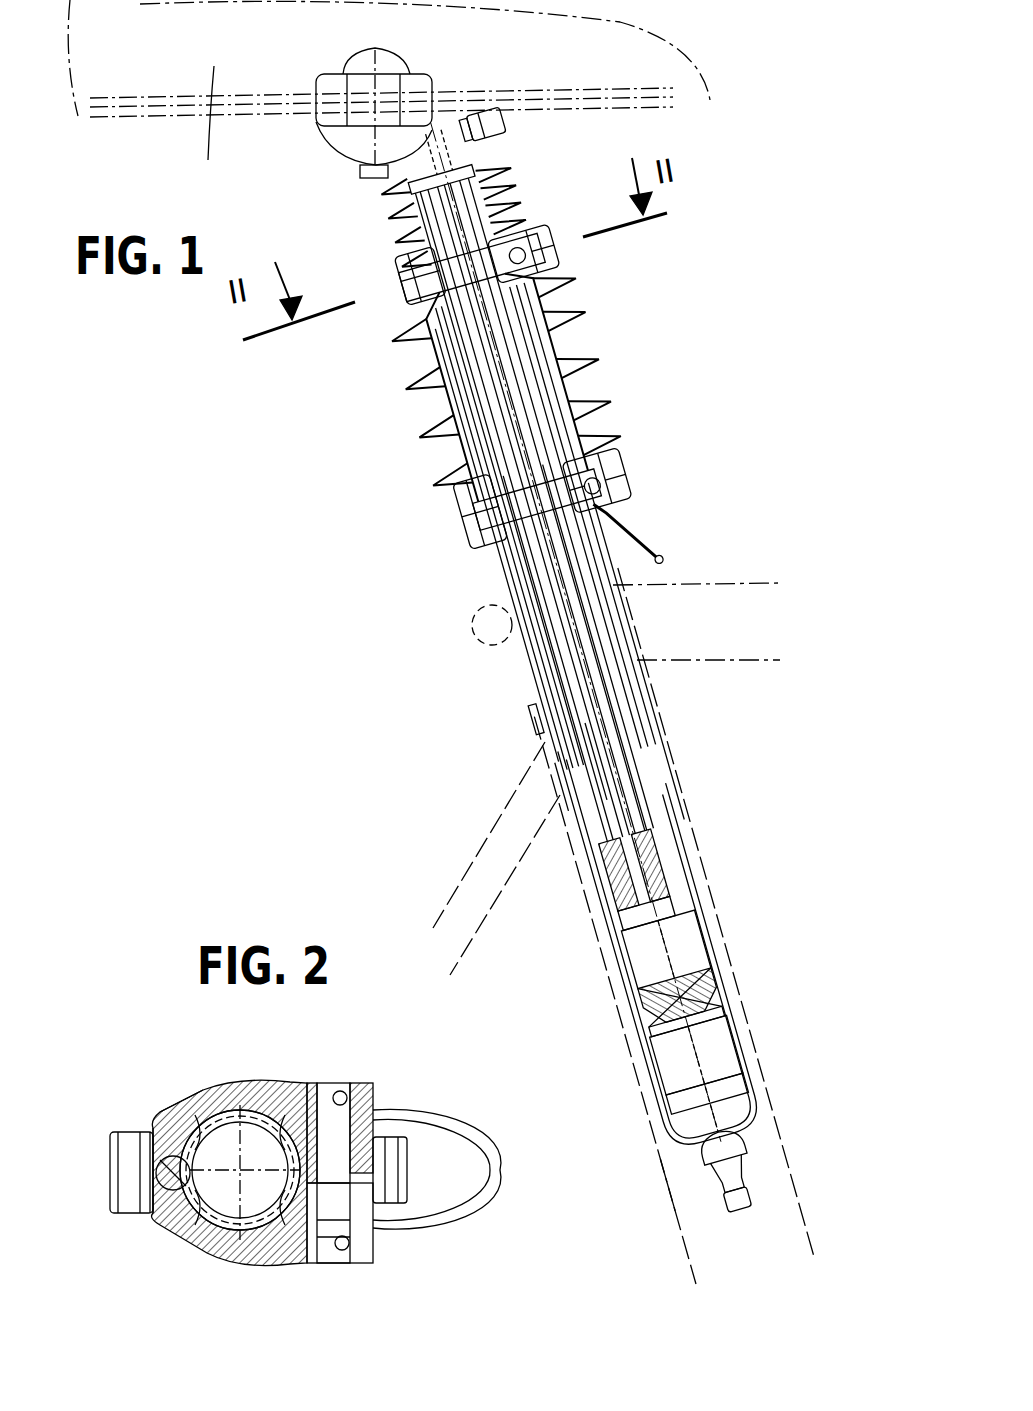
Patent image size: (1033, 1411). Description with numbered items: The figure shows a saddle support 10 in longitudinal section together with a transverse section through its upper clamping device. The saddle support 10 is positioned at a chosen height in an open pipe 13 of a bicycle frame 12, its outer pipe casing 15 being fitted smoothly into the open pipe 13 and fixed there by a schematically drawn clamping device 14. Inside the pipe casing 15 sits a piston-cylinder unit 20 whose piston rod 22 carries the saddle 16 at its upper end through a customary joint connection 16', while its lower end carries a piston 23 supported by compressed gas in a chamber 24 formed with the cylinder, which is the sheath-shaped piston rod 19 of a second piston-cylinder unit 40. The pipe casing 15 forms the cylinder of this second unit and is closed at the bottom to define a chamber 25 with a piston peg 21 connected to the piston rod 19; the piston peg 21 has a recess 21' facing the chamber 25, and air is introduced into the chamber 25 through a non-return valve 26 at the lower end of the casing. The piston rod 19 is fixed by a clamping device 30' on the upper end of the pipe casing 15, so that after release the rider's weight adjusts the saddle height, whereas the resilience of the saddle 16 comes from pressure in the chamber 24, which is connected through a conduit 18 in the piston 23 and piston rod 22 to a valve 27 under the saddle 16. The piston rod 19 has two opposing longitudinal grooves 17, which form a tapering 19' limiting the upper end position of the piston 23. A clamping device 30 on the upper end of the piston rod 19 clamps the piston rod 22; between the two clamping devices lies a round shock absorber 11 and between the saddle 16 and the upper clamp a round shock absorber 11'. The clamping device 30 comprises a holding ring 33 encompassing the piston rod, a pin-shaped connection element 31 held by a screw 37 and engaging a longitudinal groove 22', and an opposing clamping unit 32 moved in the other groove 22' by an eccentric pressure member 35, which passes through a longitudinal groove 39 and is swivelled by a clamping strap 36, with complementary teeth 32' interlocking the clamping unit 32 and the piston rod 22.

In FIG. 1, the saddle support 10 is at (352, 422).
In FIG. 1, the round shock absorber 11 is at (554, 383).
In FIG. 1, the round shock absorber 11' is at (485, 205).
In FIG. 1, the bicycle frame 12 is at (762, 628).
In FIG. 1, the open pipe 13 is at (697, 1262).
In FIG. 1, the clamping device 14 is at (478, 636).
In FIG. 1, the pipe casing 15 is at (533, 670).
In FIG. 1, the saddle 16 is at (381, 130).
In FIG. 1, the joint connection 16' is at (350, 134).
In FIG. 1, the longitudinal grooves 17 is at (505, 575).
In FIG. 1, the conduit 18 is at (585, 708).
In FIG. 1, the piston rod 19 is at (712, 929).
In FIG. 2, the piston rod 19 is at (243, 1211).
In FIG. 1, the tapering 19' is at (598, 574).
In FIG. 1, the piston-cylinder unit 20 is at (612, 994).
In FIG. 1, the piston peg 21 is at (734, 982).
In FIG. 1, the recess 21' is at (658, 1095).
In FIG. 1, the piston rod 22 is at (546, 607).
In FIG. 2, the piston rod 22 is at (229, 1146).
In FIG. 1, the longitudinal groove 22' is at (522, 278).
In FIG. 2, the longitudinal groove 22' is at (211, 1149).
In FIG. 1, the piston 23 is at (657, 857).
In FIG. 1, the chamber 24 is at (650, 953).
In FIG. 1, the chamber 25 is at (730, 1080).
In FIG. 1, the valve 26 is at (723, 1150).
In FIG. 1, the valve 27 is at (497, 113).
In FIG. 1, the clamping device 30 is at (433, 299).
In FIG. 2, the clamping device 30 is at (151, 1210).
In FIG. 1, the clamping device 30' is at (618, 485).
In FIG. 1, the connection element 31 is at (457, 527).
In FIG. 2, the connection element 31 is at (150, 1128).
In FIG. 1, the clamping unit 32 is at (670, 460).
In FIG. 2, the clamping unit 32 is at (337, 1135).
In FIG. 1, the teeth 32' is at (658, 501).
In FIG. 2, the teeth 32' is at (335, 1250).
In FIG. 1, the holding ring 33 is at (633, 450).
In FIG. 2, the holding ring 33 is at (234, 1083).
In FIG. 2, the eccentric pressure member 35 is at (375, 1105).
In FIG. 1, the clamping strap 36 is at (664, 560).
In FIG. 2, the clamping strap 36 is at (487, 1208).
In FIG. 2, the screw 37 is at (112, 1170).
In FIG. 1, the longitudinal groove 39 is at (560, 255).
In FIG. 1, the second piston-cylinder unit 40 is at (640, 1147).